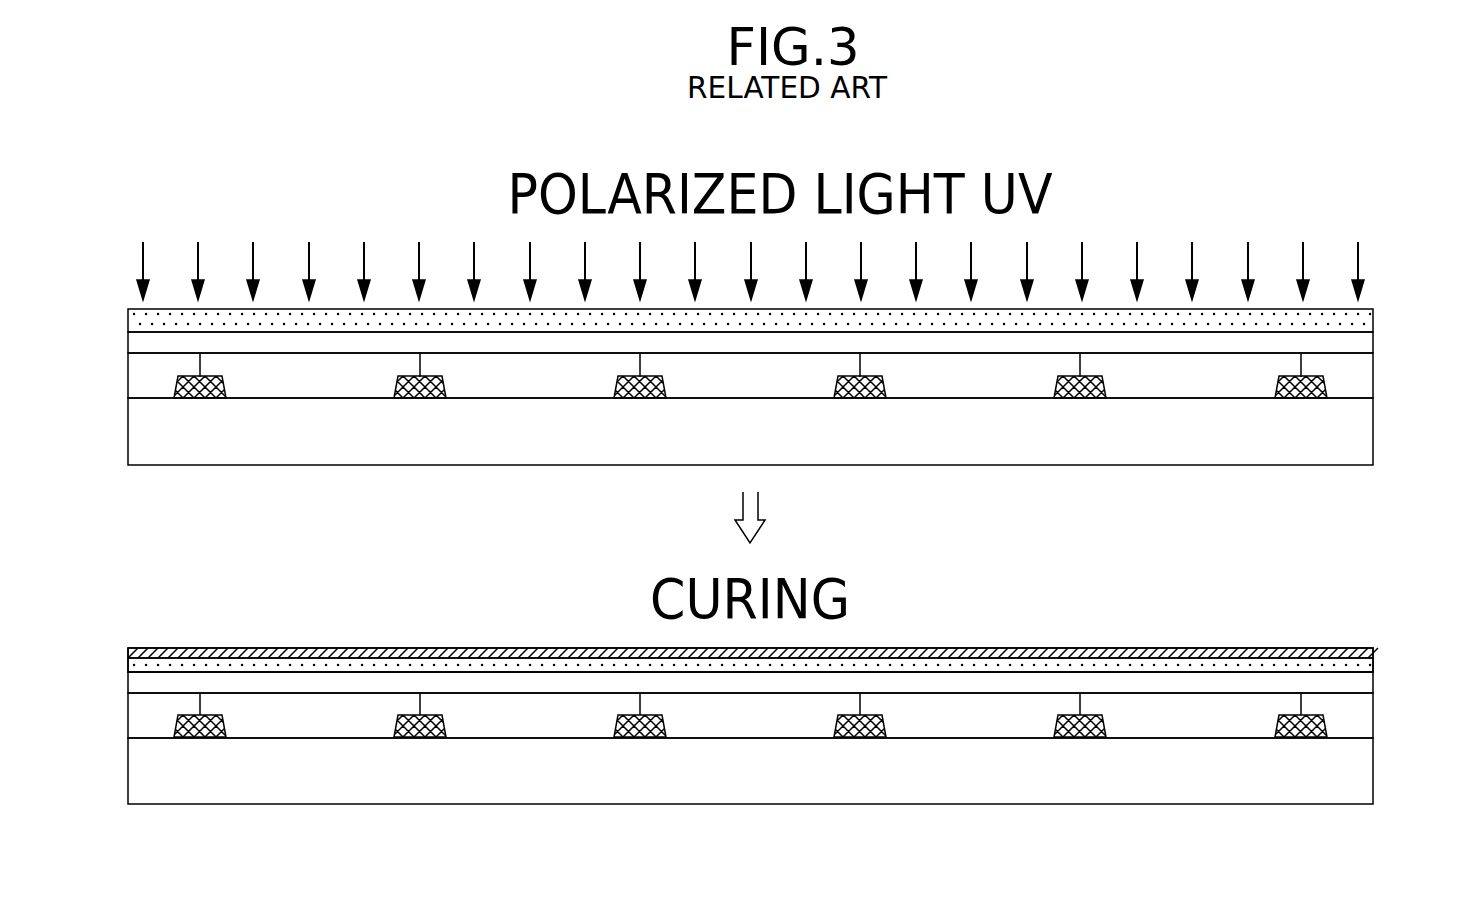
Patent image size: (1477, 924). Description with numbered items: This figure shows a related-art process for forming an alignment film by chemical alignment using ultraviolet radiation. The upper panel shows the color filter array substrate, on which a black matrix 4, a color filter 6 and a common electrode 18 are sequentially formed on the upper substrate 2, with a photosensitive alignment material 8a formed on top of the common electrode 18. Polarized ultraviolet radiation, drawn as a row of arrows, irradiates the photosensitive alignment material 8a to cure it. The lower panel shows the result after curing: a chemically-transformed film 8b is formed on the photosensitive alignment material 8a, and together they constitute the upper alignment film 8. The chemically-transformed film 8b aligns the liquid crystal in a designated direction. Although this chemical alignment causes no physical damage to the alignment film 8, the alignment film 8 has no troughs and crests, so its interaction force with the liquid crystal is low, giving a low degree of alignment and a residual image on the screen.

The upper substrate 2 is at (1373, 432).
The black matrix 4 is at (205, 399).
The color filter 6 is at (1373, 376).
The common electrode 18 is at (1373, 338).
The upper alignment film 8 is at (1413, 642).
The photosensitive alignment material 8a is at (1373, 314).
The chemically-transformed film 8b is at (1346, 649).